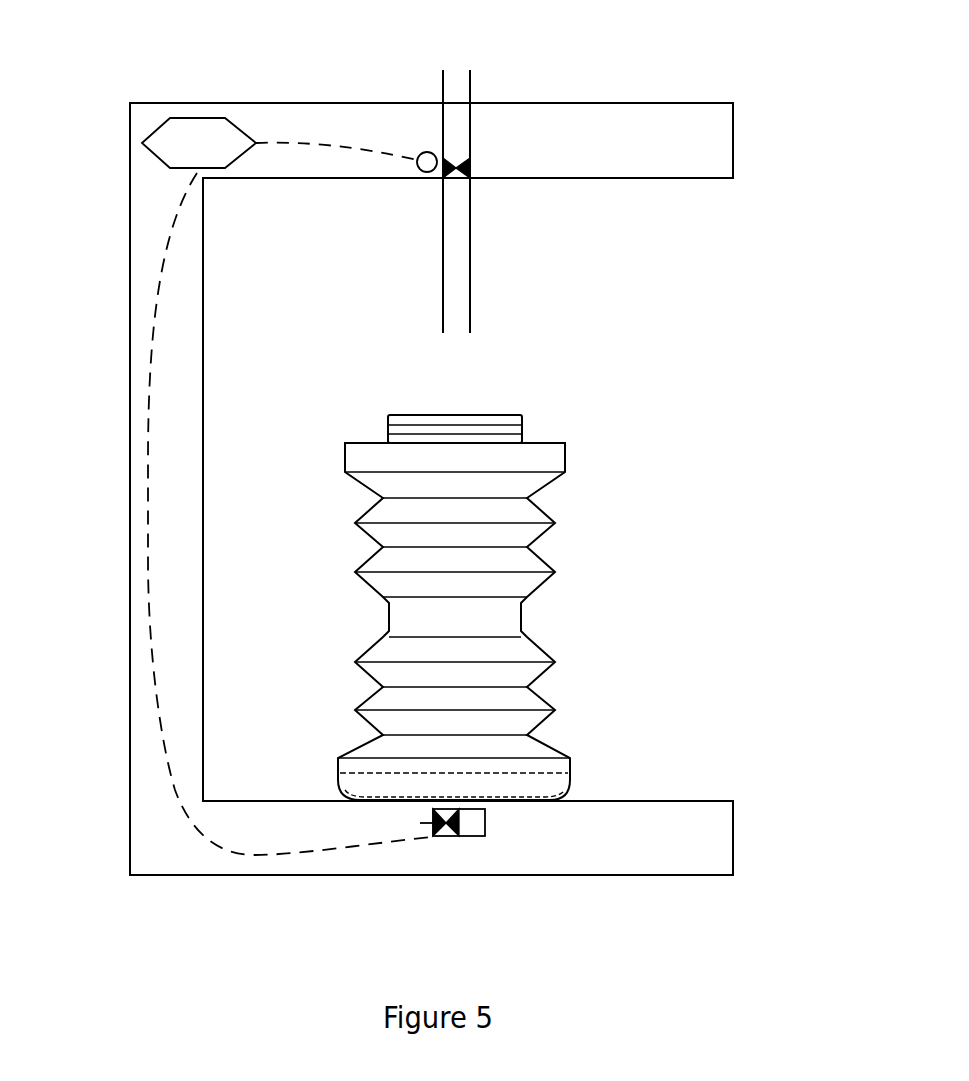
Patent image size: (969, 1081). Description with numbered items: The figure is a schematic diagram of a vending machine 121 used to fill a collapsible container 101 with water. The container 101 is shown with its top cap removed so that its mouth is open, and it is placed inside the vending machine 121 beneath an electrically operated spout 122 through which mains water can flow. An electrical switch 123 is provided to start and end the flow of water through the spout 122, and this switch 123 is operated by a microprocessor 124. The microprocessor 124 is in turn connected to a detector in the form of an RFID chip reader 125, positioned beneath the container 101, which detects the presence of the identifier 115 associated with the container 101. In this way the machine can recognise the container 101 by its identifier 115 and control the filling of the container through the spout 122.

The container 101 is at (565, 445).
The identifier 115 is at (487, 802).
The vending machine 121 is at (130, 797).
The electrically operated spout 122 is at (469, 168).
The electrical switch 123 is at (416, 160).
The microprocessor 124 is at (172, 167).
The RFID chip reader 125 is at (452, 836).